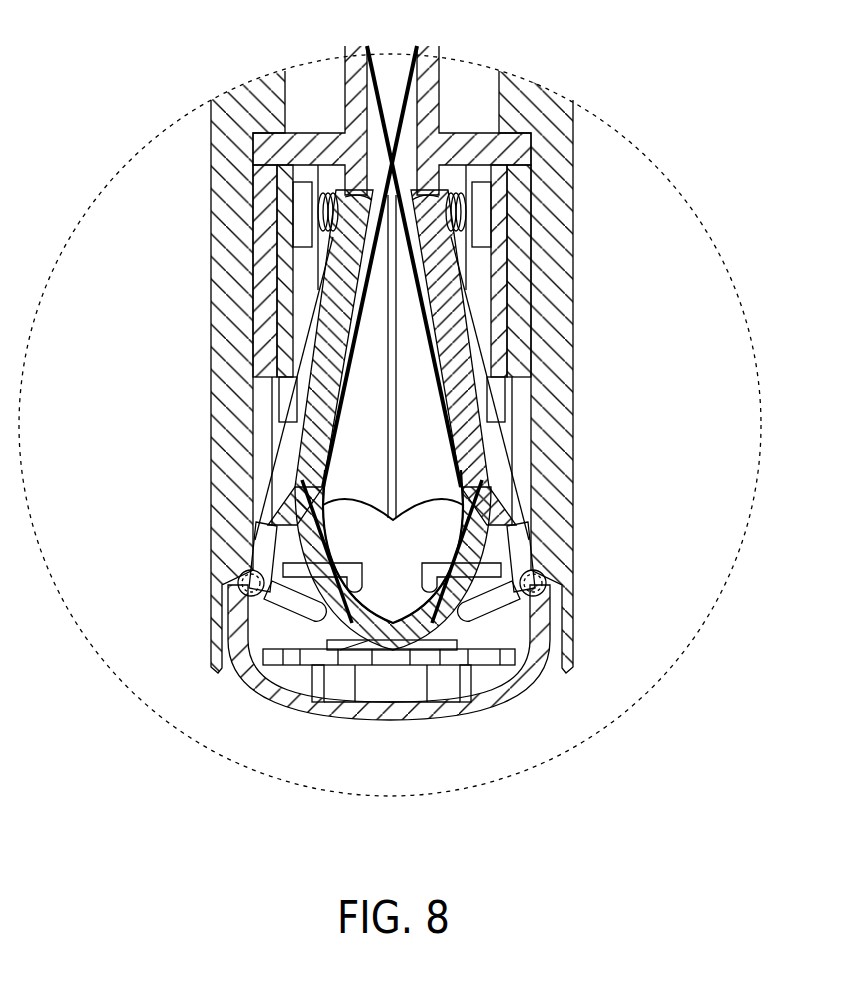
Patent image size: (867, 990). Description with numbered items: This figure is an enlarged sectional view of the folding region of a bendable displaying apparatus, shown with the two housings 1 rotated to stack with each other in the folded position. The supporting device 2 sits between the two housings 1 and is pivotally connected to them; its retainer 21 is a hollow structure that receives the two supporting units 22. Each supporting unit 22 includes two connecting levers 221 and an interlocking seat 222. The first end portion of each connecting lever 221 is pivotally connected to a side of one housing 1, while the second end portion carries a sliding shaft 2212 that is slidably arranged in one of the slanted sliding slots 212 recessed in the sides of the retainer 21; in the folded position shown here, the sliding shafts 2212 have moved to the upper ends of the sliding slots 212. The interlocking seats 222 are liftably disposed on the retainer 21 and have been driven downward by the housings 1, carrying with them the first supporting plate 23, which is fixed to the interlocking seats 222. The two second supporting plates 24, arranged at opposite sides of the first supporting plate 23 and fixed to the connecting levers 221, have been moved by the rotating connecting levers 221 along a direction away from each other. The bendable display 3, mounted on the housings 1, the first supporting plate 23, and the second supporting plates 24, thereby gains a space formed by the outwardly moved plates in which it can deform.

The housing 1 is at (211, 226).
The supporting device 2 is at (387, 719).
The bendable display 3 is at (418, 624).
The retainer 21 is at (268, 690).
The supporting unit 22 is at (399, 348).
The first supporting plate 23 is at (362, 646).
The second supporting plate 24 is at (275, 540).
The sliding slot 212 is at (484, 602).
The connecting lever 221 is at (330, 275).
The interlocking seat 222 is at (392, 660).
The sliding shaft 2212 is at (547, 580).